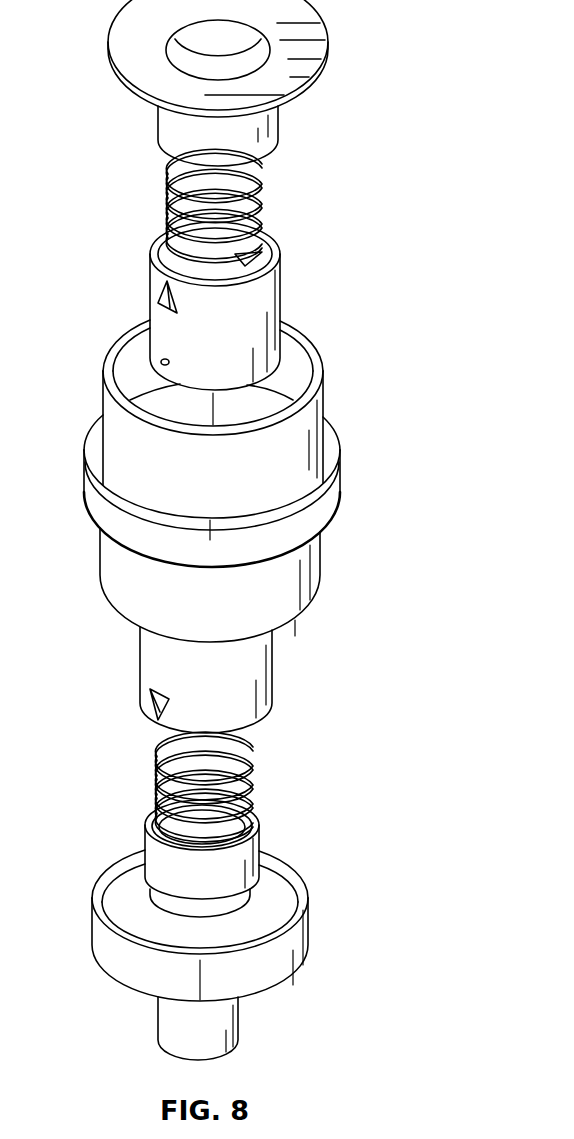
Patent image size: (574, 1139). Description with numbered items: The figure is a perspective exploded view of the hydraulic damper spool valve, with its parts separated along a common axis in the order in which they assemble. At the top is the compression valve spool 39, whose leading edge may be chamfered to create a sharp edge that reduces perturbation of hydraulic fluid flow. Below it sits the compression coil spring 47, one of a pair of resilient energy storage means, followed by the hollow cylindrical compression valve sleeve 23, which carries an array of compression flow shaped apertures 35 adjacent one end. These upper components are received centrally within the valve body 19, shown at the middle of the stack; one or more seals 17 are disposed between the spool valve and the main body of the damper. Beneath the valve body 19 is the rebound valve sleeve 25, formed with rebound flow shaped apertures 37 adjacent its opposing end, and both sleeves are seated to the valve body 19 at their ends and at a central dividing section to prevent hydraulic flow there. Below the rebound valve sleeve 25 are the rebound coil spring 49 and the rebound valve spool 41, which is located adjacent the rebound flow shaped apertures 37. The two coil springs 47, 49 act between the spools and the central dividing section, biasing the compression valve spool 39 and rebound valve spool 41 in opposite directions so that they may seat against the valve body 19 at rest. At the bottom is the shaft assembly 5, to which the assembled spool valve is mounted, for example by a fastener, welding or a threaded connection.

The shaft assembly 5 is at (158, 1022).
The seal 17 is at (335, 495).
The valve body 19 is at (313, 410).
The compression valve sleeve 23 is at (217, 306).
The rebound valve sleeve 25 is at (213, 679).
The compression flow shaped apertures 35 is at (162, 292).
The rebound flow shaped apertures 37 is at (150, 695).
The compression valve spool 39 is at (158, 115).
The rebound valve spool 41 is at (262, 862).
The compression coil spring 47 is at (266, 194).
The rebound coil spring 49 is at (254, 782).